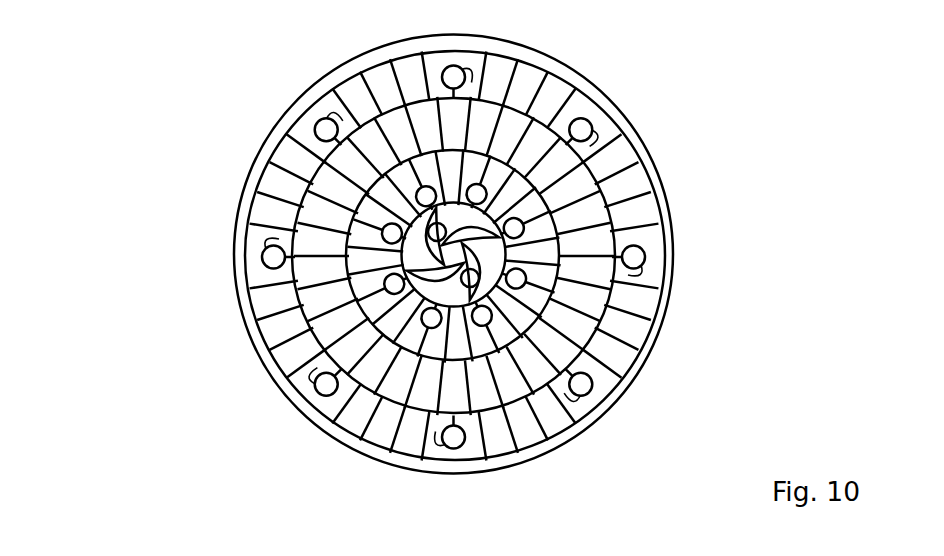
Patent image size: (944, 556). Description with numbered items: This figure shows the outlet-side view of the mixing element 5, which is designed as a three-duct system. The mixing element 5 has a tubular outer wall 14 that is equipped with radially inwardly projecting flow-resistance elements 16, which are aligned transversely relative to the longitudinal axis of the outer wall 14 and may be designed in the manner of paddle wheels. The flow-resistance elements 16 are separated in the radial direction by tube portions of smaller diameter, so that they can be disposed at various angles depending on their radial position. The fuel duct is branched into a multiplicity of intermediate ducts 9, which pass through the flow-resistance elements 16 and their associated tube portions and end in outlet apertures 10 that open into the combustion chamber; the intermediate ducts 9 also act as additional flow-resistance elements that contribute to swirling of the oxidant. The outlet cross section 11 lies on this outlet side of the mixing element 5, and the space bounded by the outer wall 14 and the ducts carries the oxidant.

The mixing element 5 is at (98, 63).
The intermediate duct 9 is at (484, 74).
The outlet aperture 10 is at (448, 229).
The outlet cross section 11 is at (606, 381).
The outer wall 14 is at (238, 166).
The flow-resistance element 16 is at (295, 299).